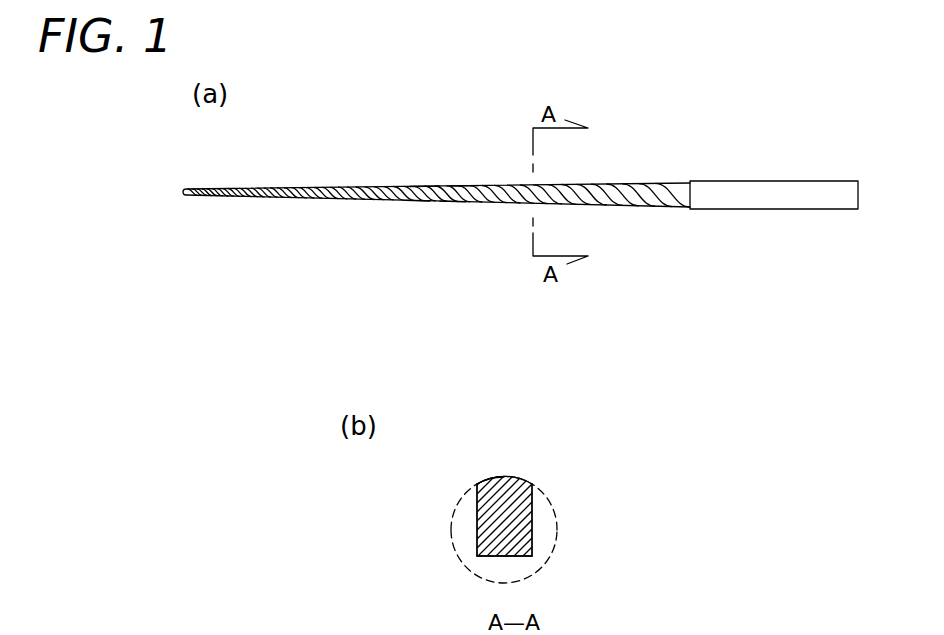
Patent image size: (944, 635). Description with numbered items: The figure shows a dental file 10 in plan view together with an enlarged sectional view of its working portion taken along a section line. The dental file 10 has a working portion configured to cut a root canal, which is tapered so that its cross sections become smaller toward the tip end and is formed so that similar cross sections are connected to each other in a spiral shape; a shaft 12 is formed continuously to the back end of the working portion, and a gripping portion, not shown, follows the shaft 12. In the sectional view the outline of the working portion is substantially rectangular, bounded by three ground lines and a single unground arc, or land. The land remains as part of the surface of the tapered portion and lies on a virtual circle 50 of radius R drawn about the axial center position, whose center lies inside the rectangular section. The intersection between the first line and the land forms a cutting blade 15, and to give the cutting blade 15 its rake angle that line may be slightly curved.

The dental file 10 is at (378, 158).
The shaft 12 is at (745, 197).
The cutting blade 15 is at (478, 484).
The virtual circle 50 is at (553, 500).